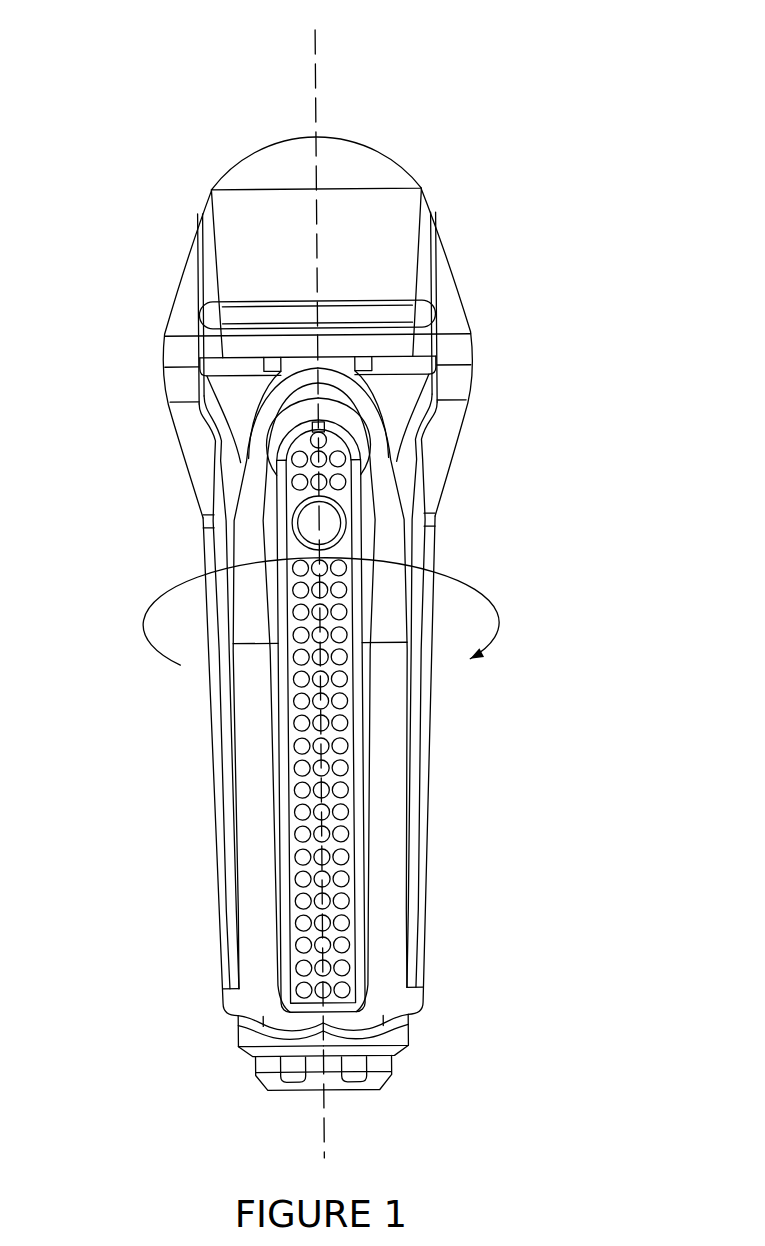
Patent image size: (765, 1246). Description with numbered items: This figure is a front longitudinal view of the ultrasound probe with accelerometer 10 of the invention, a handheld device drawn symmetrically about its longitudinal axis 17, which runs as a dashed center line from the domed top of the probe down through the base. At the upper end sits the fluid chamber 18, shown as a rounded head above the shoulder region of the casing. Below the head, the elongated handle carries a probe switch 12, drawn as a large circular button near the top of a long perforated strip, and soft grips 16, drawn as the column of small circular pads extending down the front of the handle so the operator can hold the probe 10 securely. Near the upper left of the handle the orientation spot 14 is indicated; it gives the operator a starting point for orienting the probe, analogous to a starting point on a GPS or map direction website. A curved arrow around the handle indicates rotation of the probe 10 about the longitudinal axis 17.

The ultrasound probe with accelerometer 10 is at (465, 207).
The probe switch 12 is at (327, 524).
The orientation spot 14 is at (190, 527).
The soft grips 16 is at (327, 733).
The longitudinal axis 17 is at (315, 103).
The fluid chamber 18 is at (352, 167).